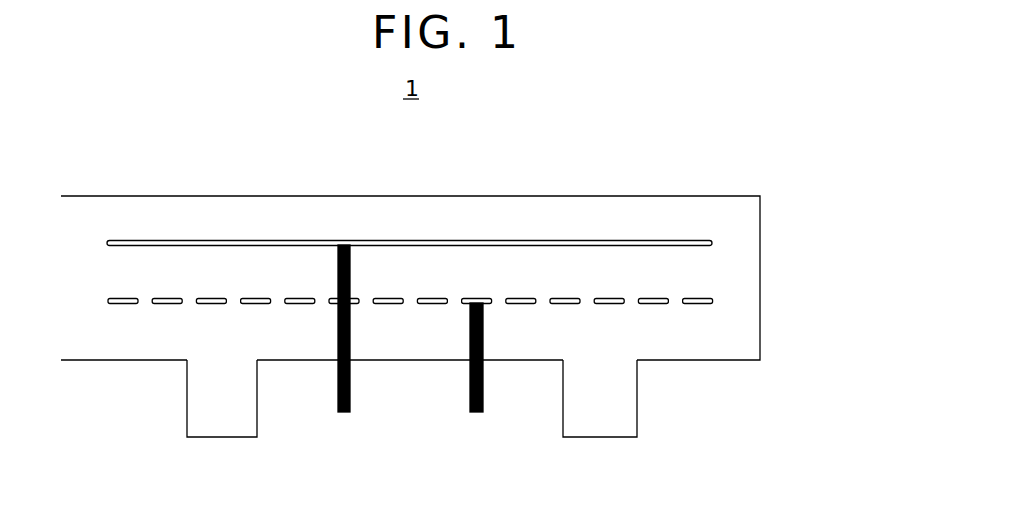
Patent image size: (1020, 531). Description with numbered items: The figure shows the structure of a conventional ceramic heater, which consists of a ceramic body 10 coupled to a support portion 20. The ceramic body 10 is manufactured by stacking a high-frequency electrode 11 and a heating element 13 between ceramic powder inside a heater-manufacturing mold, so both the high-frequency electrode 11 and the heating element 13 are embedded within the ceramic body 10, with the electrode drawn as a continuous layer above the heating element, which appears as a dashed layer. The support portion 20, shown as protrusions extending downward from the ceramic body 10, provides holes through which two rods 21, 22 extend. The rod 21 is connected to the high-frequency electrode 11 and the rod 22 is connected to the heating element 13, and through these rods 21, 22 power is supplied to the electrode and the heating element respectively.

The ceramic body 10 is at (763, 178).
The high-frequency electrode 11 is at (712, 243).
The heating element 13 is at (712, 302).
The support portion 20 is at (635, 447).
The rod 21 is at (344, 412).
The rod 22 is at (476, 412).